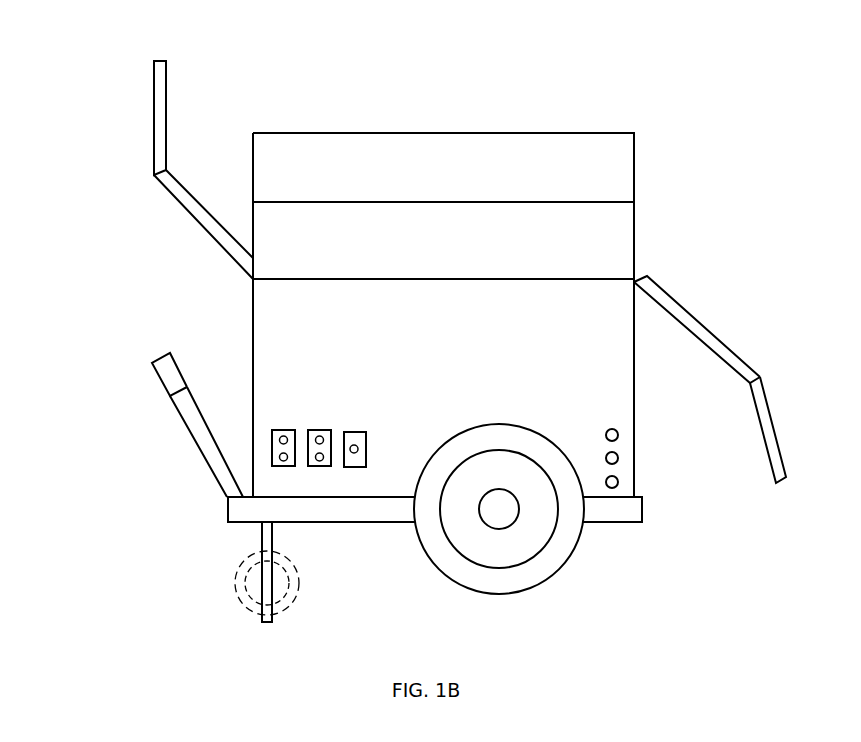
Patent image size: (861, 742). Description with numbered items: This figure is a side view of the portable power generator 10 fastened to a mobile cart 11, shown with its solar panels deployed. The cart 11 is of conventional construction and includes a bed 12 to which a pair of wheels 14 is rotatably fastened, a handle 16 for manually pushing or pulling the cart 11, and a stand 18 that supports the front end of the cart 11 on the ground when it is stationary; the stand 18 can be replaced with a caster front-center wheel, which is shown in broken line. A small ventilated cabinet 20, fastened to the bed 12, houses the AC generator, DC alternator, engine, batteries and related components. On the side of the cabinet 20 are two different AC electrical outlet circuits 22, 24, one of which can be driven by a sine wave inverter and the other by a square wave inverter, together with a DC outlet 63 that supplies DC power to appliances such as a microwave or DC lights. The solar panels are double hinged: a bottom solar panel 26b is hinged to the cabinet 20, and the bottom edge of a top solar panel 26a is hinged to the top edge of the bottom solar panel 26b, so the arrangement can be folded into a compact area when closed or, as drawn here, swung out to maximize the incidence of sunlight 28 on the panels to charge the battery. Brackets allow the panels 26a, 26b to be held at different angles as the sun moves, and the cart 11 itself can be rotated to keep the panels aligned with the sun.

The portable power generator 10 is at (117, 47).
The mobile cart 11 is at (636, 394).
The bed 12 is at (346, 510).
The wheels 14 is at (502, 580).
The handle 16 is at (157, 379).
The stand 18 is at (262, 585).
The cabinet 20 is at (252, 323).
The electrical outlet circuit 22 is at (283, 430).
The electrical outlet circuit 24 is at (319, 430).
The top solar panel 26a is at (154, 117).
The bottom solar panel 26b is at (217, 213).
The sunlight 28 is at (460, 103).
The DC outlet 63 is at (355, 432).